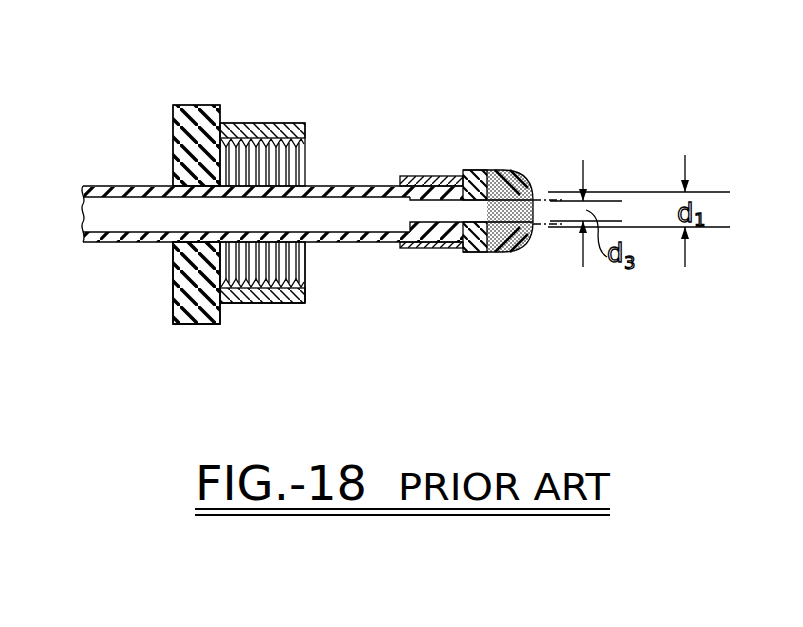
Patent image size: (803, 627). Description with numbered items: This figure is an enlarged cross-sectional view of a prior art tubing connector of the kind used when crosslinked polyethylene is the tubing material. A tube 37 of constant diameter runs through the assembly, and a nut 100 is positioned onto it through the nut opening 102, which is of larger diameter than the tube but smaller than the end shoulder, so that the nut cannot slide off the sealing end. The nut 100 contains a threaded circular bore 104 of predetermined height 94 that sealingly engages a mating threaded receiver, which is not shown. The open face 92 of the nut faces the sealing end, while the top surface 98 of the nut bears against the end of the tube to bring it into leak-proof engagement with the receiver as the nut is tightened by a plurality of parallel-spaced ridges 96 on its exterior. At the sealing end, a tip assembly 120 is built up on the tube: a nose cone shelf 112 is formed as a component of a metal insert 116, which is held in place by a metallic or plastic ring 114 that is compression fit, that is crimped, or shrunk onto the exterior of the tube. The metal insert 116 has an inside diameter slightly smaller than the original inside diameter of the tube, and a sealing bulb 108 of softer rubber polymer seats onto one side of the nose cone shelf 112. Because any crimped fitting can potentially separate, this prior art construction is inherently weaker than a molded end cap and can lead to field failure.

The nut 100 is at (204, 96).
The nut opening 102 is at (173, 184).
The threaded circular bore 104 is at (303, 158).
The tube 37 is at (338, 186).
The tip assembly 120 is at (462, 160).
The metal insert 116 is at (538, 200).
The top surface 98 is at (175, 292).
The parallel-spaced ridges 96 is at (195, 325).
The predetermined height 94 is at (273, 304).
The open face 92 is at (305, 290).
The ring 114 is at (423, 248).
The nose cone shelf 112 is at (474, 252).
The sealing bulb 108 is at (560, 263).